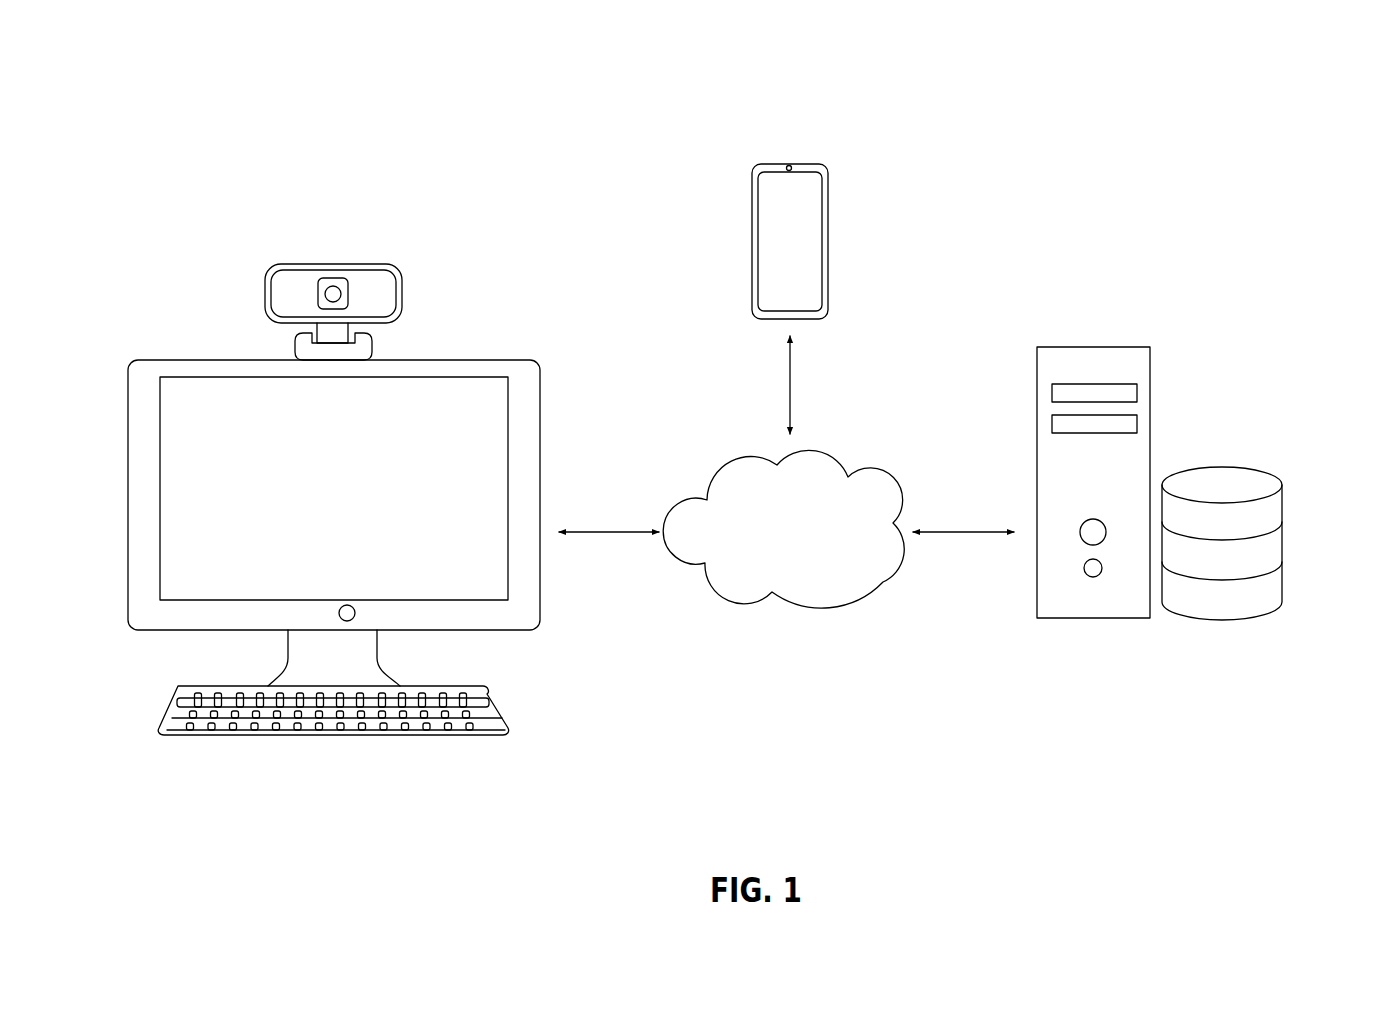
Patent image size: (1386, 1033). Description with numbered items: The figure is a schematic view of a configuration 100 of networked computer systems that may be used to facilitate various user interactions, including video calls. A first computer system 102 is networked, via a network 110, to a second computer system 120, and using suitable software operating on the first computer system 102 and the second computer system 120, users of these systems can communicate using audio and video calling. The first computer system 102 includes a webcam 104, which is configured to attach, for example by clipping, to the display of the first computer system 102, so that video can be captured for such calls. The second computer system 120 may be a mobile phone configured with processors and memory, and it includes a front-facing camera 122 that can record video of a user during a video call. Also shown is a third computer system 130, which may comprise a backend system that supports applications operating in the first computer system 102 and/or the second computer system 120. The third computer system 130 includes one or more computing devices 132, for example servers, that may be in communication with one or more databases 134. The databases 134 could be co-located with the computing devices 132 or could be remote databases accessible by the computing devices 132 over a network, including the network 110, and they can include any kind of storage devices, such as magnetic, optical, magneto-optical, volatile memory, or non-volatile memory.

The configuration 100 is at (518, 148).
The first computer system 102 is at (172, 278).
The webcam 104 is at (357, 265).
The network 110 is at (830, 603).
The second computer system 120 is at (752, 247).
The front-facing camera 122 is at (790, 167).
The third computer system 130 is at (1283, 290).
The computing devices 132 is at (1108, 347).
The databases 134 is at (1283, 542).